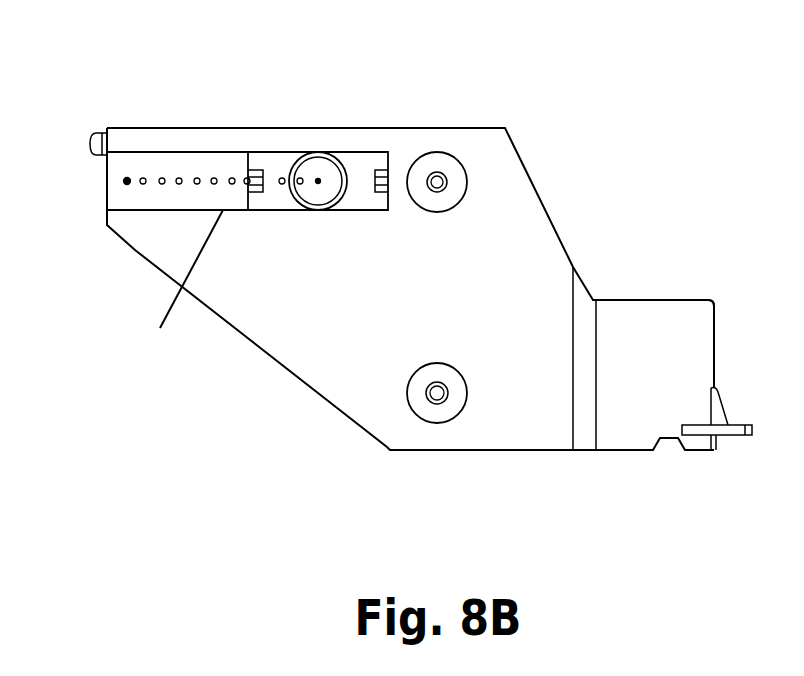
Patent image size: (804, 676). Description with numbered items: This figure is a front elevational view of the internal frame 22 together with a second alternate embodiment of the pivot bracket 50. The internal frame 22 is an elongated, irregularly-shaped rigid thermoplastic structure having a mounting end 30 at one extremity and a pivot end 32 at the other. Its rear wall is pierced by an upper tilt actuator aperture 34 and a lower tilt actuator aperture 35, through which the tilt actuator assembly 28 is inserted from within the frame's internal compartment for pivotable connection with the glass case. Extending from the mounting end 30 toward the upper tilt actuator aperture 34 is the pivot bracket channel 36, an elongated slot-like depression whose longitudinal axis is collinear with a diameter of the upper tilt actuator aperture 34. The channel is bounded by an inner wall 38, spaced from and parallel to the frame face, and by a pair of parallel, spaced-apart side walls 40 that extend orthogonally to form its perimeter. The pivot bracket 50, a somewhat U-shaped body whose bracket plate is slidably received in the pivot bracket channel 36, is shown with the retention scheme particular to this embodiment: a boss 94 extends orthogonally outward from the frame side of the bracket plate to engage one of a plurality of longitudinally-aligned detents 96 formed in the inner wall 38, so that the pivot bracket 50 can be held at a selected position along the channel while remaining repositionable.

The internal frame 22 is at (667, 301).
The tilt actuator assembly 28 is at (433, 178).
The mounting end 30 is at (125, 256).
The pivot end 32 is at (724, 436).
The upper tilt actuator aperture 34 is at (458, 157).
The lower tilt actuator aperture 35 is at (430, 418).
The pivot bracket channel 36 is at (227, 152).
The inner wall 38 is at (167, 172).
The side walls 40 is at (132, 152).
The pivot bracket 50 is at (292, 152).
The boss 94 is at (320, 178).
The detents 96 is at (126, 181).